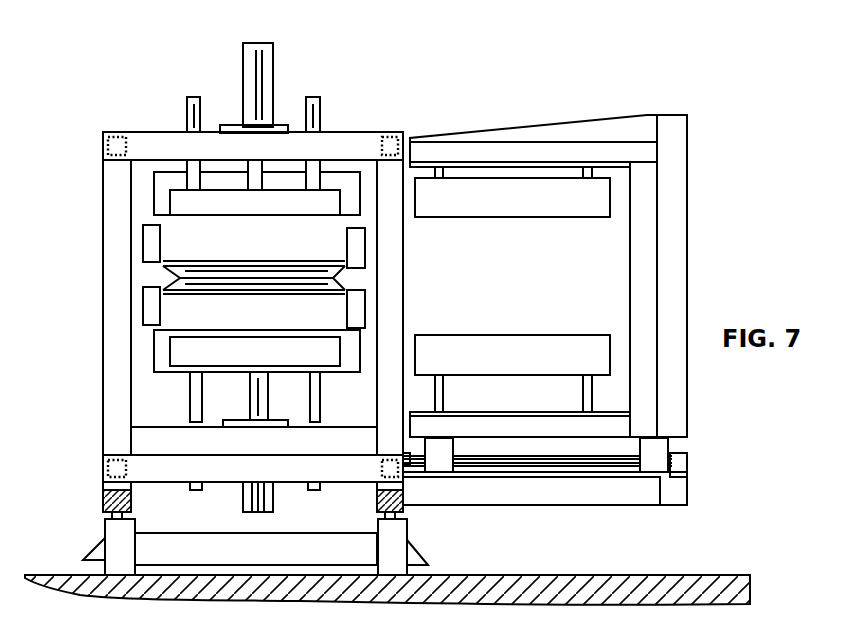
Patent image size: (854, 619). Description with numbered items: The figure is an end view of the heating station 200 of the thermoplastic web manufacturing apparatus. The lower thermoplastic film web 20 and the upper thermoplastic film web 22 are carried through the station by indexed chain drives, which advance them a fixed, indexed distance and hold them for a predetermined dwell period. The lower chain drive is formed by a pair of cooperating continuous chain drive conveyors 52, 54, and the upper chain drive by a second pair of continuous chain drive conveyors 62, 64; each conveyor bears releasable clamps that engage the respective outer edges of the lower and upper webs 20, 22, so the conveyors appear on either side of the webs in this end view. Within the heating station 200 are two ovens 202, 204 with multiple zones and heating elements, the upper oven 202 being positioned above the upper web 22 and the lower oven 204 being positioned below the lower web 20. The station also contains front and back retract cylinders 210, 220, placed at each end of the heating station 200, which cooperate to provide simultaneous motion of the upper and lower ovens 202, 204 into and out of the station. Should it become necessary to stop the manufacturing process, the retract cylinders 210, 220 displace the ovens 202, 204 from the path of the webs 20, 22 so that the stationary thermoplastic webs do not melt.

The heating station 200 is at (363, 40).
The continuous chain drive conveyor 52 is at (150, 250).
The continuous chain drive conveyor 54 is at (355, 250).
The continuous chain drive conveyor 62 is at (150, 309).
The continuous chain drive conveyor 64 is at (358, 315).
The lower thermoplastic film web 20 is at (178, 277).
The upper thermoplastic film web 22 is at (225, 293).
The oven 202 is at (546, 207).
The oven 204 is at (530, 347).
The front retract cylinder 210 is at (532, 463).
The back retract cylinder 220 is at (545, 488).